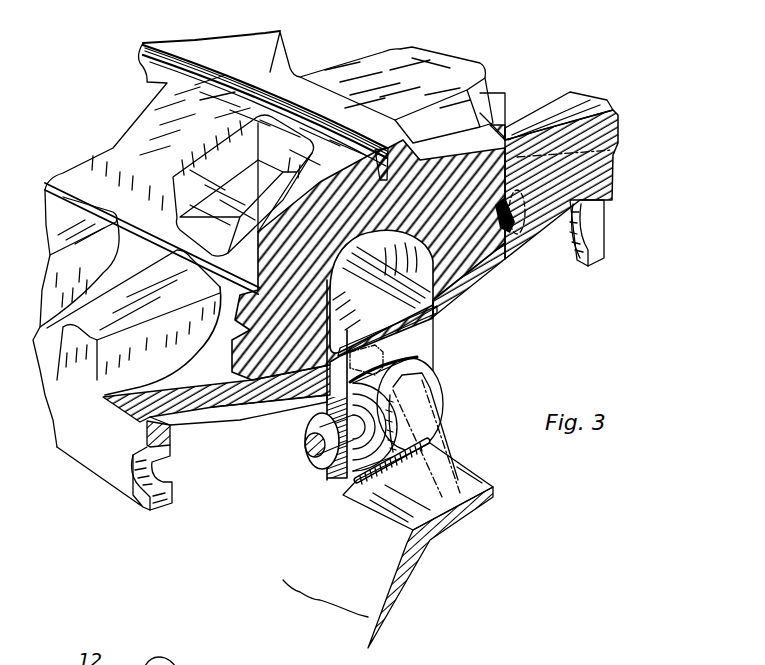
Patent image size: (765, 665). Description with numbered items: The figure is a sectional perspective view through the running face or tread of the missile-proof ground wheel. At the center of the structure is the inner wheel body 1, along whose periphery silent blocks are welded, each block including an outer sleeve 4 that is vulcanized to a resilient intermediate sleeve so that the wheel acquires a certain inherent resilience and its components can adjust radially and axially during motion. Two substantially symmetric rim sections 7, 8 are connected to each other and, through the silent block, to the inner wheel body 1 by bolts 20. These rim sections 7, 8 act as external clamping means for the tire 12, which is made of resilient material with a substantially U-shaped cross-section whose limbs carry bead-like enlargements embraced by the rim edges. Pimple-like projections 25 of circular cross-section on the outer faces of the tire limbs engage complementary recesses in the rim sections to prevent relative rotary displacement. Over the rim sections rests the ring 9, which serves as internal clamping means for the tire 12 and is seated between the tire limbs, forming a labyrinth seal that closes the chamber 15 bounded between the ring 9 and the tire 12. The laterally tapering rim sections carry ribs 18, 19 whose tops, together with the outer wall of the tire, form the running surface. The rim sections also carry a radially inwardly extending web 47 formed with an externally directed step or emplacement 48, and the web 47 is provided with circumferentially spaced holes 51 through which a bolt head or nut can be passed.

The inner wheel body 1 is at (383, 636).
The sleeve 4 is at (422, 368).
The rim section 7 is at (217, 402).
The rim section 8 is at (492, 278).
The ring 9 is at (383, 330).
The tire 12 is at (364, 78).
The chamber 15 is at (447, 323).
The rib 18 is at (130, 321).
The rib 19 is at (588, 106).
The bolt 20 is at (313, 455).
The pimple-like projection 25 is at (522, 228).
The flange or web 47 is at (100, 456).
The step or emplacement 48 is at (168, 430).
The hole 51 is at (135, 475).